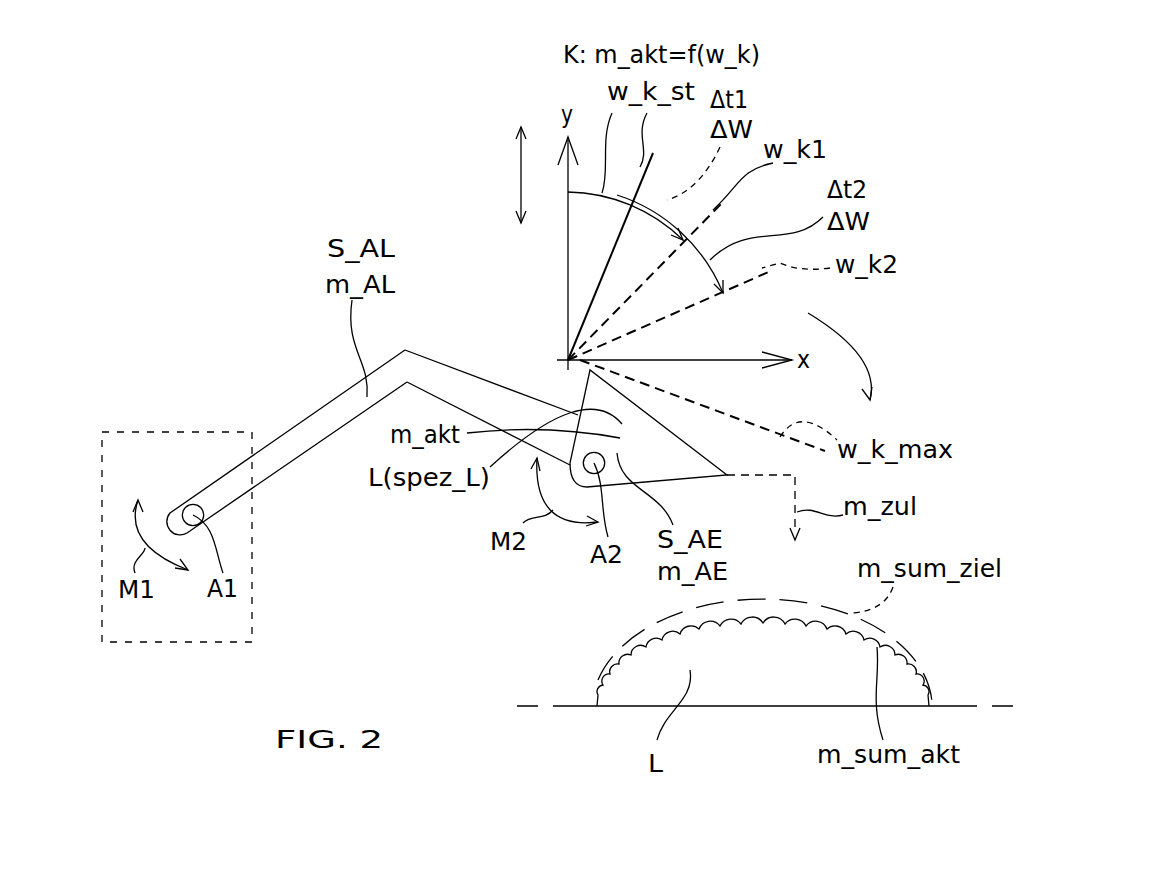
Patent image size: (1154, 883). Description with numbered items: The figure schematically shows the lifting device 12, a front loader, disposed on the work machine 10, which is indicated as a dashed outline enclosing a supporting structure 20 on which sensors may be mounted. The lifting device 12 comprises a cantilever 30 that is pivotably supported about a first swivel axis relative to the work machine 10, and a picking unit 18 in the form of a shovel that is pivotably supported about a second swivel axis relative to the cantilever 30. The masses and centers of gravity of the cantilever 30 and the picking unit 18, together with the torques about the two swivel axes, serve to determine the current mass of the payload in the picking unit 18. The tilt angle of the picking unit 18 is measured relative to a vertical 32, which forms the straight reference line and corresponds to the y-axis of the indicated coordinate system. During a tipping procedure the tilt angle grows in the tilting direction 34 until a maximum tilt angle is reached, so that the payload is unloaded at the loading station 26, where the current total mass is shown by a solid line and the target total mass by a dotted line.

The work machine 10 is at (167, 647).
The lifting device 12 is at (444, 364).
The picking unit 18 is at (568, 411).
The supporting structure 20 is at (188, 463).
The loading station 26 is at (772, 713).
The cantilever 30 is at (303, 438).
The vertical 32 is at (522, 177).
The tilting direction 34 is at (863, 358).